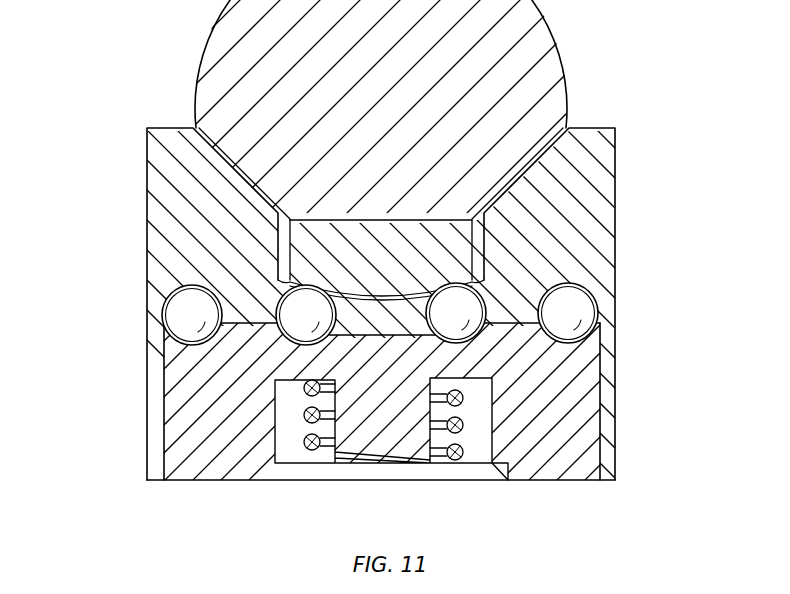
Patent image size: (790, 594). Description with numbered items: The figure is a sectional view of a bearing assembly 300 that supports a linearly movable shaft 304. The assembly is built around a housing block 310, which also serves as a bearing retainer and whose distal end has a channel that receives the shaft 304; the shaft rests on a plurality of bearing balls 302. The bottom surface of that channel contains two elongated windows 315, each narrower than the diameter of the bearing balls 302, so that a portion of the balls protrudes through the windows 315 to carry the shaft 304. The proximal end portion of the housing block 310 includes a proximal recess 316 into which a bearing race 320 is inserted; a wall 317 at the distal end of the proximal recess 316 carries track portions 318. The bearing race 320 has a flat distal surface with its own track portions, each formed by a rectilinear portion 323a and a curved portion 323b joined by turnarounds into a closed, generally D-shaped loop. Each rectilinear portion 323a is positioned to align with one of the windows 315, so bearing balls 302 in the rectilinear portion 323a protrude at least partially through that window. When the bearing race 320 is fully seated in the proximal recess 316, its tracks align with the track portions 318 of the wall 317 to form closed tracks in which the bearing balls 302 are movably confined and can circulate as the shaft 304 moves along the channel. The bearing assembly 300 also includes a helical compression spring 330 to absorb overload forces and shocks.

The bearing assembly 300 is at (117, 175).
The bearing balls 302 is at (222, 290).
The shaft 304 is at (396, 77).
The housing block 310 is at (614, 135).
The elongated windows 315 is at (437, 290).
The proximal recess 316 is at (615, 445).
The wall 317 is at (250, 323).
The track portions 318 is at (207, 305).
The bearing race 320 is at (568, 468).
The rectilinear portion 323a is at (330, 340).
The curved portion 323b is at (164, 330).
The helical compression spring 330 is at (325, 448).